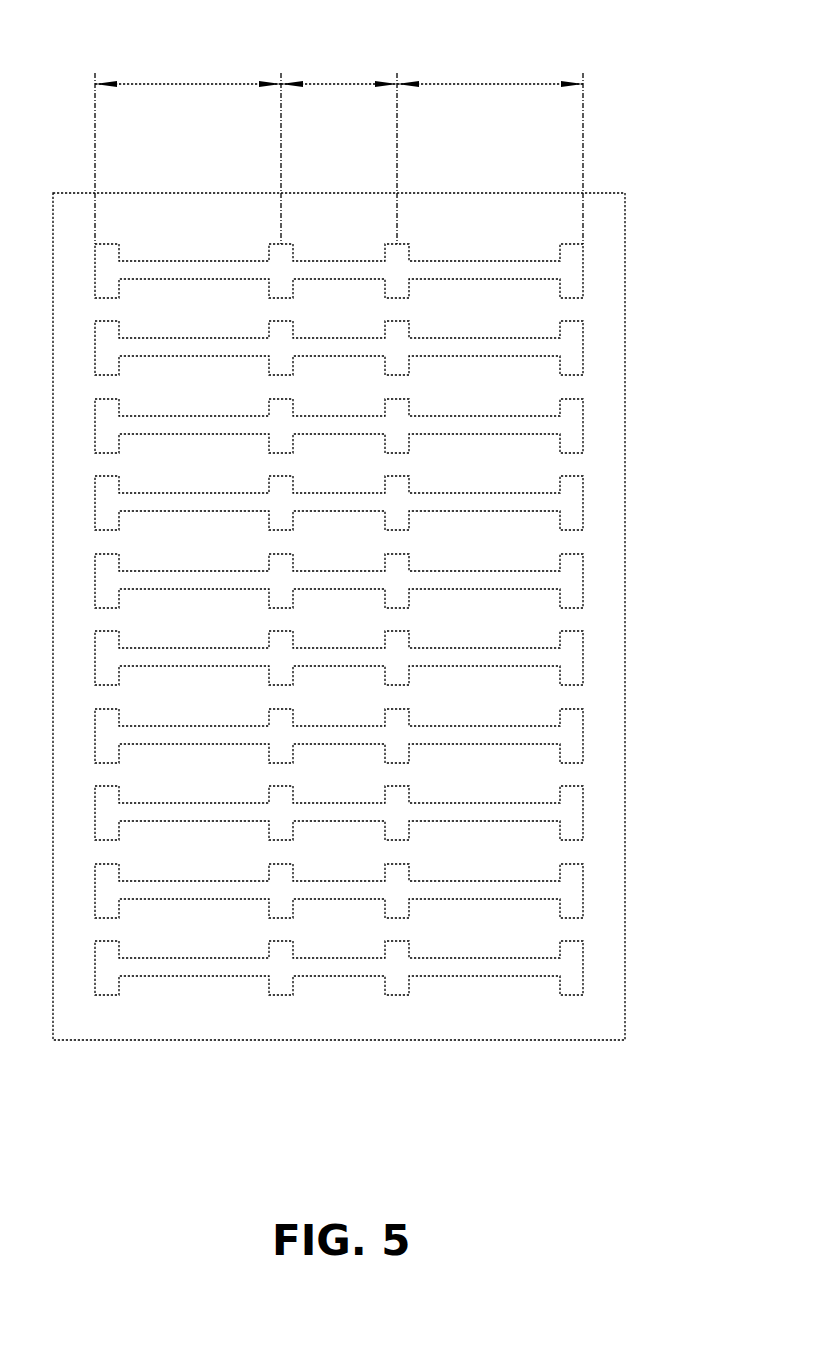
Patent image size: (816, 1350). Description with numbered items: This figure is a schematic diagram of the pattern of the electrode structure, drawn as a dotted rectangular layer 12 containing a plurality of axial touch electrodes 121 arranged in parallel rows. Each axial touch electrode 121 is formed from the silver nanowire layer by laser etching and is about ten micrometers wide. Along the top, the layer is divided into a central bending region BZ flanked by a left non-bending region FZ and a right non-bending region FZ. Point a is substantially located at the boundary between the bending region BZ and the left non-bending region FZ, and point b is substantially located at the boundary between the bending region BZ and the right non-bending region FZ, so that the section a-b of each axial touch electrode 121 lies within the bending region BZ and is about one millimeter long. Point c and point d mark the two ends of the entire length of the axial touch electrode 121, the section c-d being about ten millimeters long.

The substrate / panel 12 is at (622, 95).
The axial touch electrode 121 is at (572, 270).
The point a is at (283, 253).
The point b is at (400, 253).
The point c is at (103, 257).
The point d is at (574, 253).
The non-bending region FZ is at (339, 70).
The bending region BZ is at (339, 70).